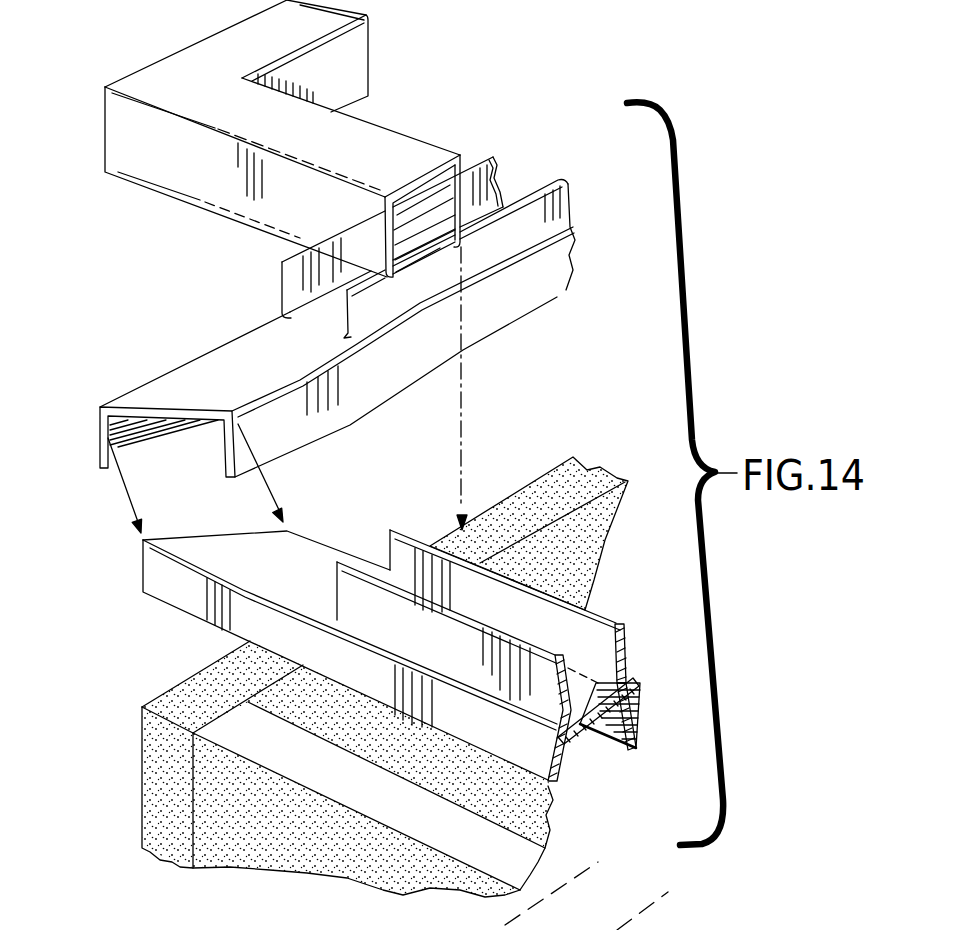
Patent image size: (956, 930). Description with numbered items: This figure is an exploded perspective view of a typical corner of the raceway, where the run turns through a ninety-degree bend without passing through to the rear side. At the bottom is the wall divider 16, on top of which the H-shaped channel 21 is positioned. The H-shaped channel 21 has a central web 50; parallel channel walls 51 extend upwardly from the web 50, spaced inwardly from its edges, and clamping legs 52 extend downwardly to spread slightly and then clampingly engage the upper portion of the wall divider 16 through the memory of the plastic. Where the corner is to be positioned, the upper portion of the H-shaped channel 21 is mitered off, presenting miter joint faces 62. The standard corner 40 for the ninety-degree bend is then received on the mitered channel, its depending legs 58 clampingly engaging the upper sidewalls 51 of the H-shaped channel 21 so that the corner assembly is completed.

The wall divider 16 is at (585, 563).
The H-shaped channel 21 is at (574, 197).
The corner 40 is at (363, 65).
The central web 50 is at (284, 367).
The channel walls 51 is at (617, 623).
The clamping legs 52 is at (548, 779).
The depending legs 58 is at (148, 175).
The miter joint faces 62 is at (140, 410).